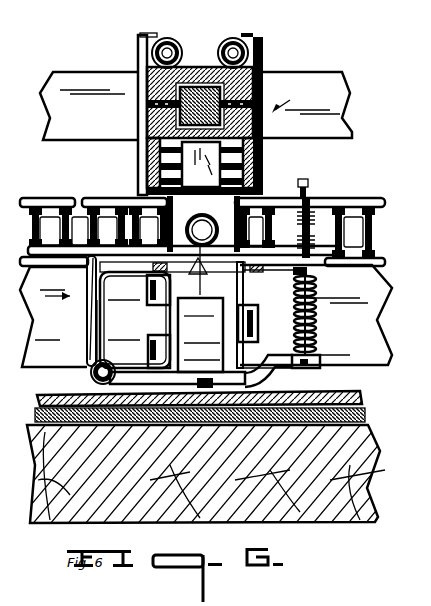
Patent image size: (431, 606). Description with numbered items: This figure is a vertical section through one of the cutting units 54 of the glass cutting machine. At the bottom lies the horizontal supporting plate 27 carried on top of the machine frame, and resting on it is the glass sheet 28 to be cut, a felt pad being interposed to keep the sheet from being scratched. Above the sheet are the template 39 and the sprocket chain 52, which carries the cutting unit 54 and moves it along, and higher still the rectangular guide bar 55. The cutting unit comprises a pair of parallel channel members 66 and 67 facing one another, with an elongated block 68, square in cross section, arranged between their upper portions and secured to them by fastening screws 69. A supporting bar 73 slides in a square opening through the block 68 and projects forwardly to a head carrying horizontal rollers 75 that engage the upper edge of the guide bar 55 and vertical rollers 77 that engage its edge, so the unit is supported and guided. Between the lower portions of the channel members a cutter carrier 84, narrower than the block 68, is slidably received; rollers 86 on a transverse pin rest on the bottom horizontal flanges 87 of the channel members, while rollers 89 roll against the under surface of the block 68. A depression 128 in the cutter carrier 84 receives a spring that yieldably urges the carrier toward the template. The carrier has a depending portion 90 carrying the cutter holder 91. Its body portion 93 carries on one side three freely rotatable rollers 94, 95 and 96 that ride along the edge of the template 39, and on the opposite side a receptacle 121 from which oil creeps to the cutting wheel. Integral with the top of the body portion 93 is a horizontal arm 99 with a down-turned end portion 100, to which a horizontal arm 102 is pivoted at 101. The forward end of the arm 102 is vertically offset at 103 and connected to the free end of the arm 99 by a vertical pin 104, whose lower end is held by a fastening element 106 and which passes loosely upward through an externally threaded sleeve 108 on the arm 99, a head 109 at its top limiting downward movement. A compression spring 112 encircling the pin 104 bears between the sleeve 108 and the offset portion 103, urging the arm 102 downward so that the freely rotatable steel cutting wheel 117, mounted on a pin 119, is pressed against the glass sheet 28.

The supporting plate 27 is at (45, 490).
The glass sheet 28 is at (362, 397).
The template 39 is at (392, 288).
The sprocket chain 52 is at (56, 198).
The cutting unit 54 is at (288, 102).
The guide bar 55 is at (330, 78).
The channel member 66 is at (148, 104).
The channel member 67 is at (263, 74).
The elongated block 68 is at (188, 86).
The fastening screws 69 is at (147, 128).
The supporting bar 73 is at (233, 38).
The horizontal rollers 75 is at (168, 38).
The vertical rollers 77 is at (137, 76).
The cutter carrier 84 is at (255, 157).
The rollers 86 is at (255, 181).
The bottom horizontal flanges 87 is at (204, 214).
The rollers 89 is at (147, 156).
The depending portion 90 is at (147, 192).
The cutter holder 91 is at (64, 292).
The body portion 93 is at (155, 335).
The roller 94 is at (147, 290).
The roller 95 is at (142, 333).
The roller 96 is at (258, 320).
The horizontal arm 99 is at (252, 272).
The down-turned end portion 100 is at (87, 319).
The pivot 101 is at (97, 357).
The horizontal arm 102 is at (93, 380).
The vertically offset end portion 103 is at (294, 369).
The vertical pin 104 is at (318, 284).
The fastening element 106 is at (320, 366).
The externally threaded sleeve 108 is at (312, 230).
The head 109 is at (310, 184).
The compression spring 112 is at (318, 325).
The steel cutting wheel 117 is at (248, 386).
The pin 119 is at (218, 356).
The receptacle 121 is at (220, 330).
The depression 128 is at (204, 290).